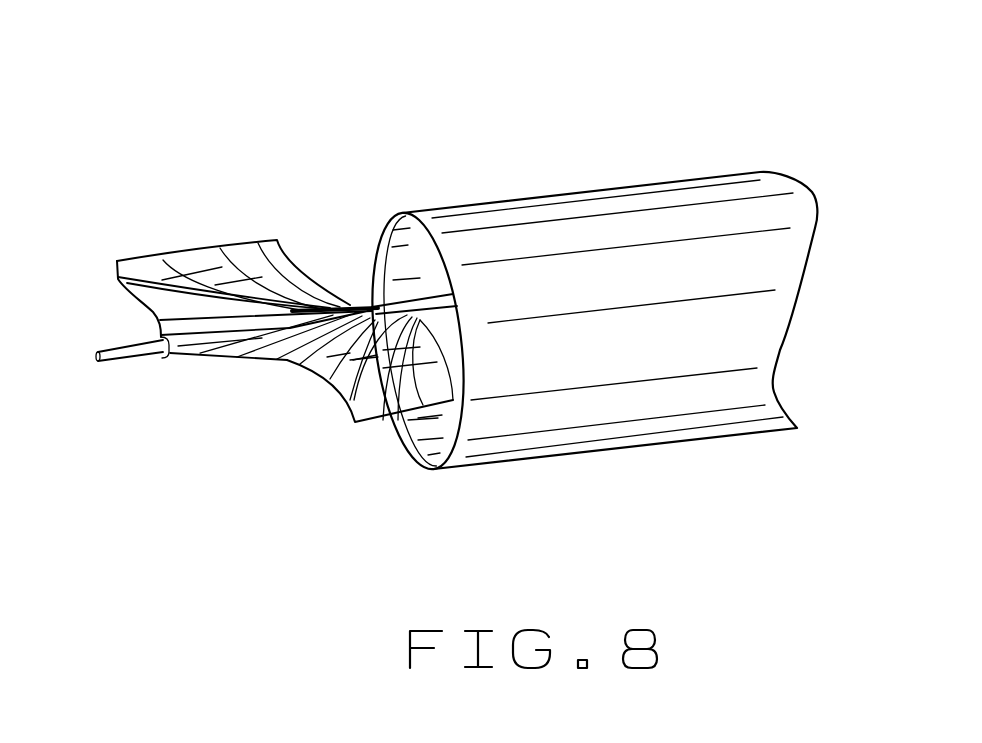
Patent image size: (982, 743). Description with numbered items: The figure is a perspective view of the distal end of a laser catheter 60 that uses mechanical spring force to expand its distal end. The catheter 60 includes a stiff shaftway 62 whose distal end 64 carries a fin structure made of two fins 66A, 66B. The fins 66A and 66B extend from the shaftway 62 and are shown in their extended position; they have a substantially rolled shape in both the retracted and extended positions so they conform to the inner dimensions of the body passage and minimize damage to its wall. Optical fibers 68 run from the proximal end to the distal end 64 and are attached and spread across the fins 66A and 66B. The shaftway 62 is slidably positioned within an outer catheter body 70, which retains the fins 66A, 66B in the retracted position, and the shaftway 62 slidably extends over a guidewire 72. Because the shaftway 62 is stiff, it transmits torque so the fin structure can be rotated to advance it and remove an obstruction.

The catheter 60 is at (581, 169).
The stiff shaftway 62 is at (202, 360).
The distal end 64 is at (334, 395).
The fin 66A is at (213, 268).
The fin 66B is at (367, 400).
The optical fibers 68 is at (280, 362).
The outer catheter body 70 is at (507, 428).
The guidewire 72 is at (118, 363).